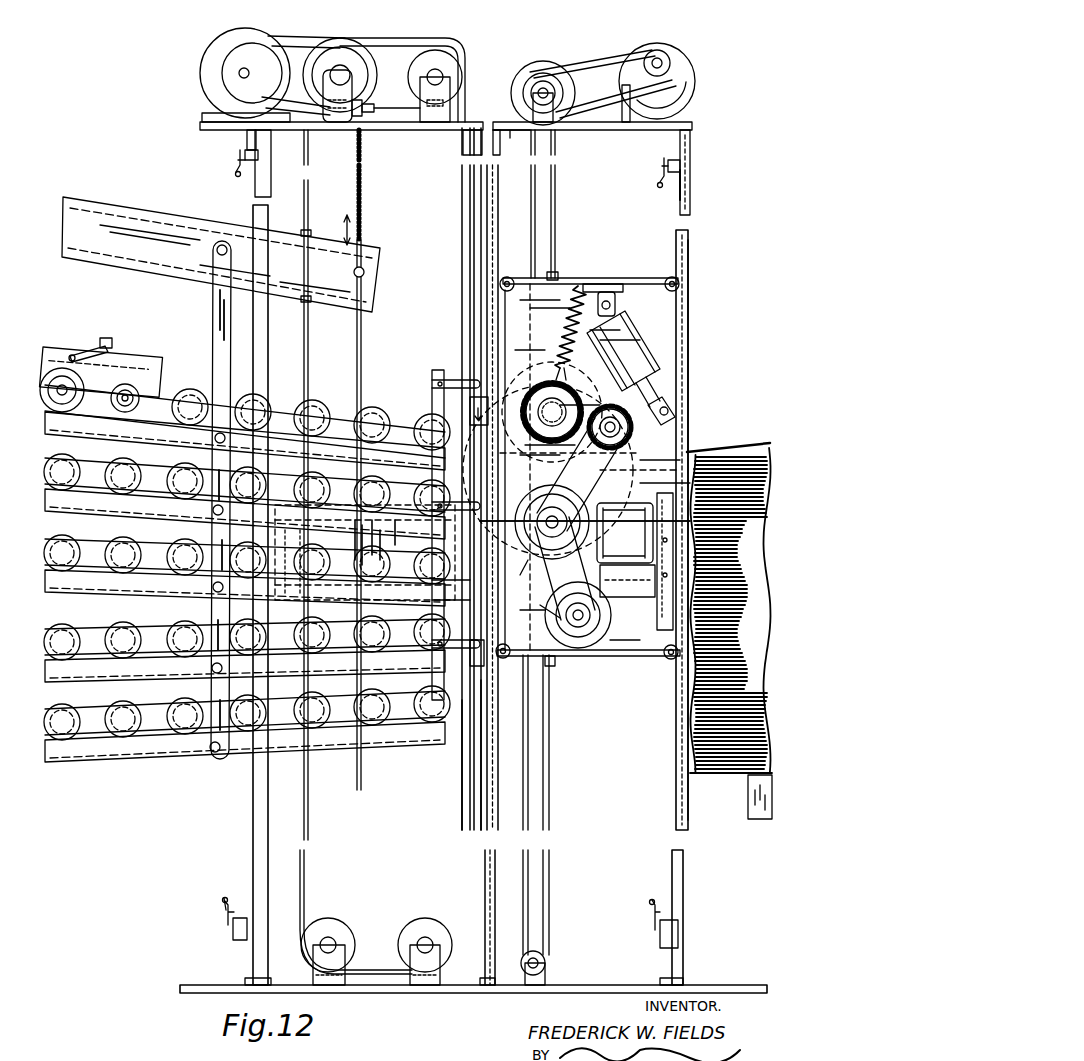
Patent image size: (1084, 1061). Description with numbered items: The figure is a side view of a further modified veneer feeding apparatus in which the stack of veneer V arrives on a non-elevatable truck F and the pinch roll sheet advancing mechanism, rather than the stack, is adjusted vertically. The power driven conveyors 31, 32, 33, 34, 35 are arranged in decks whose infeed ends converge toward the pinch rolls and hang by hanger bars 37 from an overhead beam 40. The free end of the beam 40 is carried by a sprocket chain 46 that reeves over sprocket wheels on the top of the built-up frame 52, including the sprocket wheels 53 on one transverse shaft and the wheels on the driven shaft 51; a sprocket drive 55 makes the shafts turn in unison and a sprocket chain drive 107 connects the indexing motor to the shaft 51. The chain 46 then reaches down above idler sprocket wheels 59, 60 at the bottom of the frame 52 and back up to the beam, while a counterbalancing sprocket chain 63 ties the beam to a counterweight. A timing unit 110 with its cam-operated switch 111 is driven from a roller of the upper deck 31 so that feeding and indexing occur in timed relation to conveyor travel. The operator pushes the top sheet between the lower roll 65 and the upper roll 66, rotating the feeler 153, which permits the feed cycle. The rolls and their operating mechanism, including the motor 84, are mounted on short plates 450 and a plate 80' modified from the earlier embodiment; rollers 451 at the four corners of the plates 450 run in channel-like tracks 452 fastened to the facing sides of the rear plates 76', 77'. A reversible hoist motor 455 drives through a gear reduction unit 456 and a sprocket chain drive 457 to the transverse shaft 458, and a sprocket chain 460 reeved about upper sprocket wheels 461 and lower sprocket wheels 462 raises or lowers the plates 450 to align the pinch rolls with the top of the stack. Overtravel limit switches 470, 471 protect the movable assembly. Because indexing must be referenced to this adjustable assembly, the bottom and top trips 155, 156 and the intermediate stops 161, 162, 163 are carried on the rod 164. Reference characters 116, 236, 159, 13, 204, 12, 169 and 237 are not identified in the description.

The drive pulley 116 is at (224, 42).
The sprocket chain drive 107 is at (294, 44).
The driven shaft 51 is at (342, 62).
The sprocket drive 55 is at (394, 42).
The sprocket wheels 53 is at (450, 50).
The upper sprocket wheels 461 is at (528, 56).
The sprocket chain drive 457 is at (585, 46).
The reversible electric hoist motor 455 is at (665, 52).
The transversely extending shaft 458 is at (572, 82).
The gear reduction unit 456 is at (680, 95).
The limit switch 236 is at (242, 156).
The plate 80' is at (555, 144).
The overtravel limit switch 471 is at (668, 162).
The rear plate 76' is at (712, 185).
The beam 40 is at (130, 210).
The sprocket chain 46 is at (308, 195).
The sprocket chain 63 is at (366, 180).
The sprocket chain 460 is at (553, 230).
The hanger bar 37 is at (212, 302).
The cam-operated switch 111 is at (113, 344).
The timing unit 110 is at (640, 355).
The rollers 451 is at (520, 266).
The frame 52 is at (698, 294).
The upper roll 66 is at (548, 356).
The gear 159 is at (538, 395).
The top adjustable stop 156 is at (446, 380).
The rod 164 is at (436, 396).
The web 13 is at (736, 458).
The pinion 204 is at (608, 408).
The conveyor 31 is at (117, 430).
The feeler 153 is at (612, 468).
The adjustable stop 161 is at (440, 520).
The shaft 12 is at (688, 495).
The motor 84 is at (635, 561).
The conveyor 32 is at (112, 508).
The link 169 is at (520, 548).
The lower roll 65 is at (598, 572).
The adjustable stop 162 is at (440, 592).
The conveyor 33 is at (108, 590).
The adjustable stop 163 is at (446, 652).
The plate 450 is at (576, 658).
The conveyor 34 is at (106, 678).
The bottom adjustable stop 155 is at (484, 680).
The channel-like track 452 is at (488, 772).
The conveyor 35 is at (105, 760).
The rear plate 77' is at (440, 765).
The idler sprocket wheel 60 is at (326, 925).
The idler sprocket wheel 59 is at (428, 925).
The limit switch 237 is at (232, 940).
The lower sprocket wheel 462 is at (547, 963).
The overtravel limit switch 470 is at (680, 940).
The veneer V is at (764, 419).
The truck F is at (750, 812).